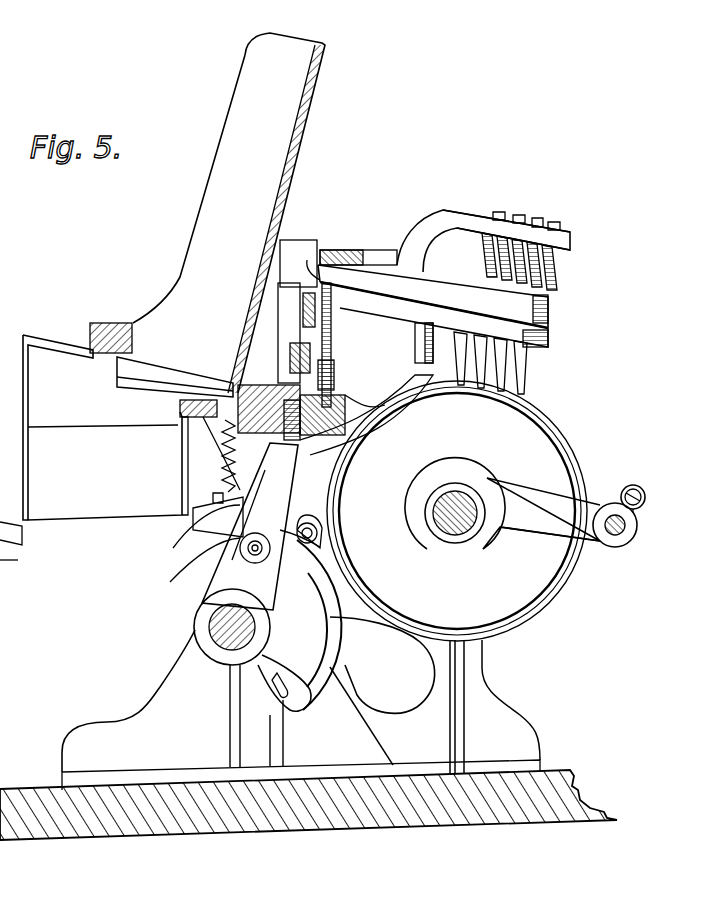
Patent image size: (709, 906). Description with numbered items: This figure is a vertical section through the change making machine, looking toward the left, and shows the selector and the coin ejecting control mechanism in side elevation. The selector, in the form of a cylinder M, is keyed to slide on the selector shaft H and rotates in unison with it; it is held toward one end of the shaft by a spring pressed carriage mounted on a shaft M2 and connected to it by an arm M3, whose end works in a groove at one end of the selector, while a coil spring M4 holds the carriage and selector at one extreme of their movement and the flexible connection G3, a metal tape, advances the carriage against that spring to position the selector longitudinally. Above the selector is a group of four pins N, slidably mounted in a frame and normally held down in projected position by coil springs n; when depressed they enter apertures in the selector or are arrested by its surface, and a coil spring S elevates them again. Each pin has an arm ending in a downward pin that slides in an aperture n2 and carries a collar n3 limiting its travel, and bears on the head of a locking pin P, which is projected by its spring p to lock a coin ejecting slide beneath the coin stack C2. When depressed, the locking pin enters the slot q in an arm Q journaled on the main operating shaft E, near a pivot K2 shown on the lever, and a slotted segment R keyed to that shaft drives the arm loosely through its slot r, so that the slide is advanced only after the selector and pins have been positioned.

The coin stack C2 is at (229, 213).
The aperture n2 is at (290, 350).
The collar n3 is at (331, 322).
The coil spring n is at (553, 270).
The pin N is at (525, 363).
The locking pin P is at (245, 380).
The coil spring S is at (222, 455).
The selector M is at (566, 452).
The coil spring M4 is at (632, 485).
The flexible connection G3 is at (643, 510).
The shaft M2 is at (623, 530).
The arm M3 is at (525, 515).
The selector shaft H is at (462, 545).
The spring p is at (345, 448).
The recess or slot q is at (300, 476).
The pivot pin K2 is at (307, 522).
The arm Q is at (195, 535).
The slot r is at (340, 590).
The main operating shaft E is at (209, 627).
The slotted segment R is at (258, 675).